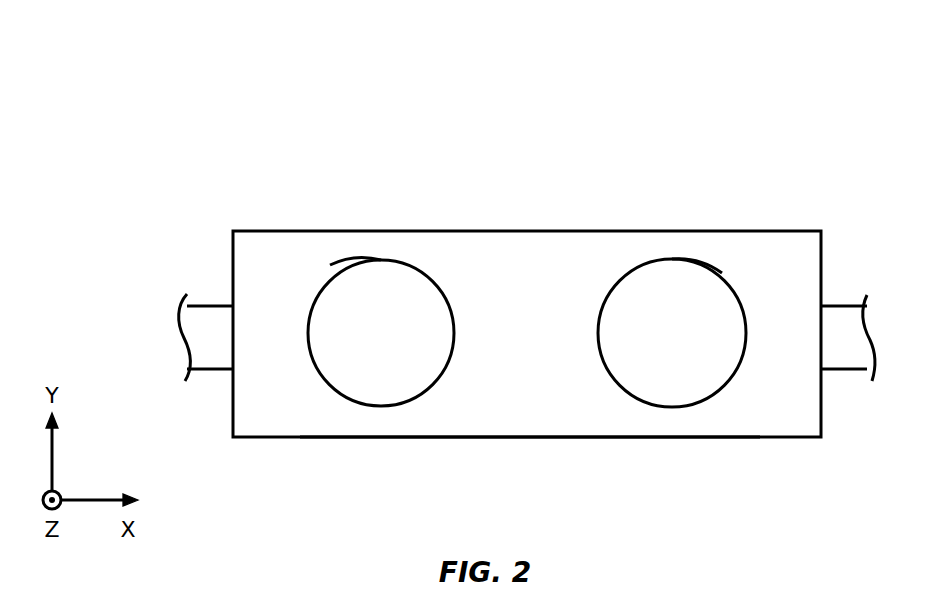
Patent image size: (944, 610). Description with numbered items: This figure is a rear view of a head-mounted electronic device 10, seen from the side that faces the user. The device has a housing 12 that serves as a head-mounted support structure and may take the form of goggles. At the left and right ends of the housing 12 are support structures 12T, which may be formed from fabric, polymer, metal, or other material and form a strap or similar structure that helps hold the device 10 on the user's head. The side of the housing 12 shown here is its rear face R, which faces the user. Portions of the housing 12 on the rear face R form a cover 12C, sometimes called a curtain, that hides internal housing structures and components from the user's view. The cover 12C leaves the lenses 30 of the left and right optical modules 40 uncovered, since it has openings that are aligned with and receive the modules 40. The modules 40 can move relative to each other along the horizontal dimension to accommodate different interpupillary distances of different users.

The electronic device 10 is at (803, 101).
The housing 12 is at (795, 230).
The cover 12C is at (546, 428).
The support structures 12T is at (202, 315).
The lens 30 is at (386, 283).
The optical modules 40 is at (334, 277).
The rear face R is at (318, 404).